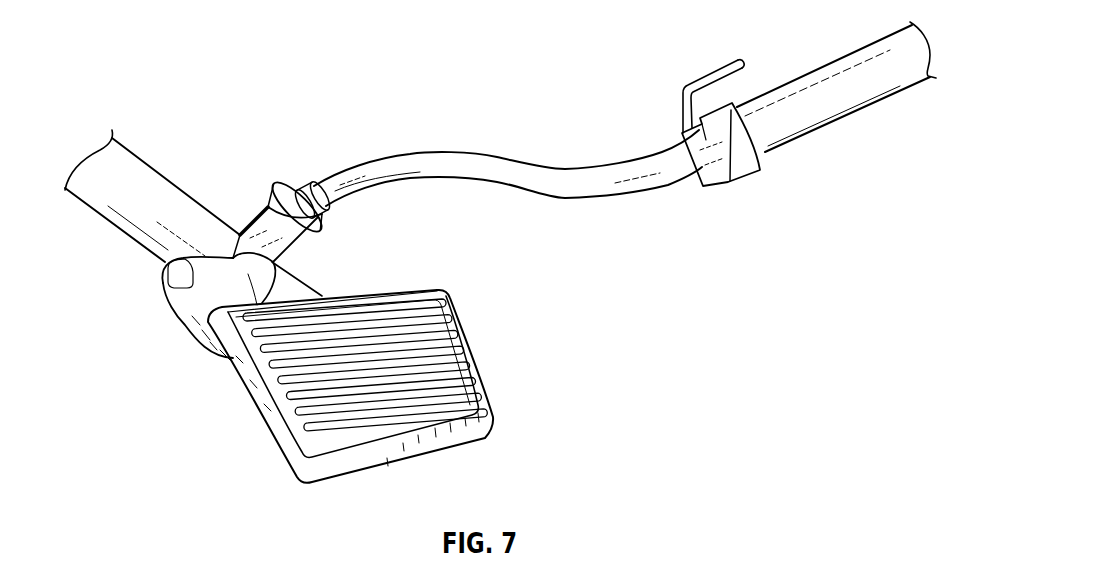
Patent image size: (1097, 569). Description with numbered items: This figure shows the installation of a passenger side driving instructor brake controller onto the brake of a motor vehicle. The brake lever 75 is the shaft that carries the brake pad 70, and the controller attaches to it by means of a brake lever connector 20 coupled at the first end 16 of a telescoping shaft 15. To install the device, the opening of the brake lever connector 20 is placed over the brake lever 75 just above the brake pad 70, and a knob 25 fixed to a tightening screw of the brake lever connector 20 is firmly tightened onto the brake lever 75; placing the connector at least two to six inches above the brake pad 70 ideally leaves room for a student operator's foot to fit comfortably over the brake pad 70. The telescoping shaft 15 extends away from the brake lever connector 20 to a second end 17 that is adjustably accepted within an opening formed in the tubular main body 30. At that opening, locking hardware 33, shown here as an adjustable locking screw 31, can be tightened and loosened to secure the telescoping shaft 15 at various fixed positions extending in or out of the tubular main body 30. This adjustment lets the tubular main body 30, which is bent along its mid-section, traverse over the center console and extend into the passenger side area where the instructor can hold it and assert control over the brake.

The telescoping shaft 15 is at (427, 152).
The first end 16 is at (300, 145).
The second end 17 is at (628, 153).
The brake lever connector 20 is at (262, 232).
The knob 25 is at (190, 303).
The tubular main body 30 is at (843, 97).
The adjustable locking screw 31 is at (712, 77).
The locking hardware 33 is at (743, 168).
The brake pad 70 is at (494, 431).
The brake lever 75 is at (142, 221).